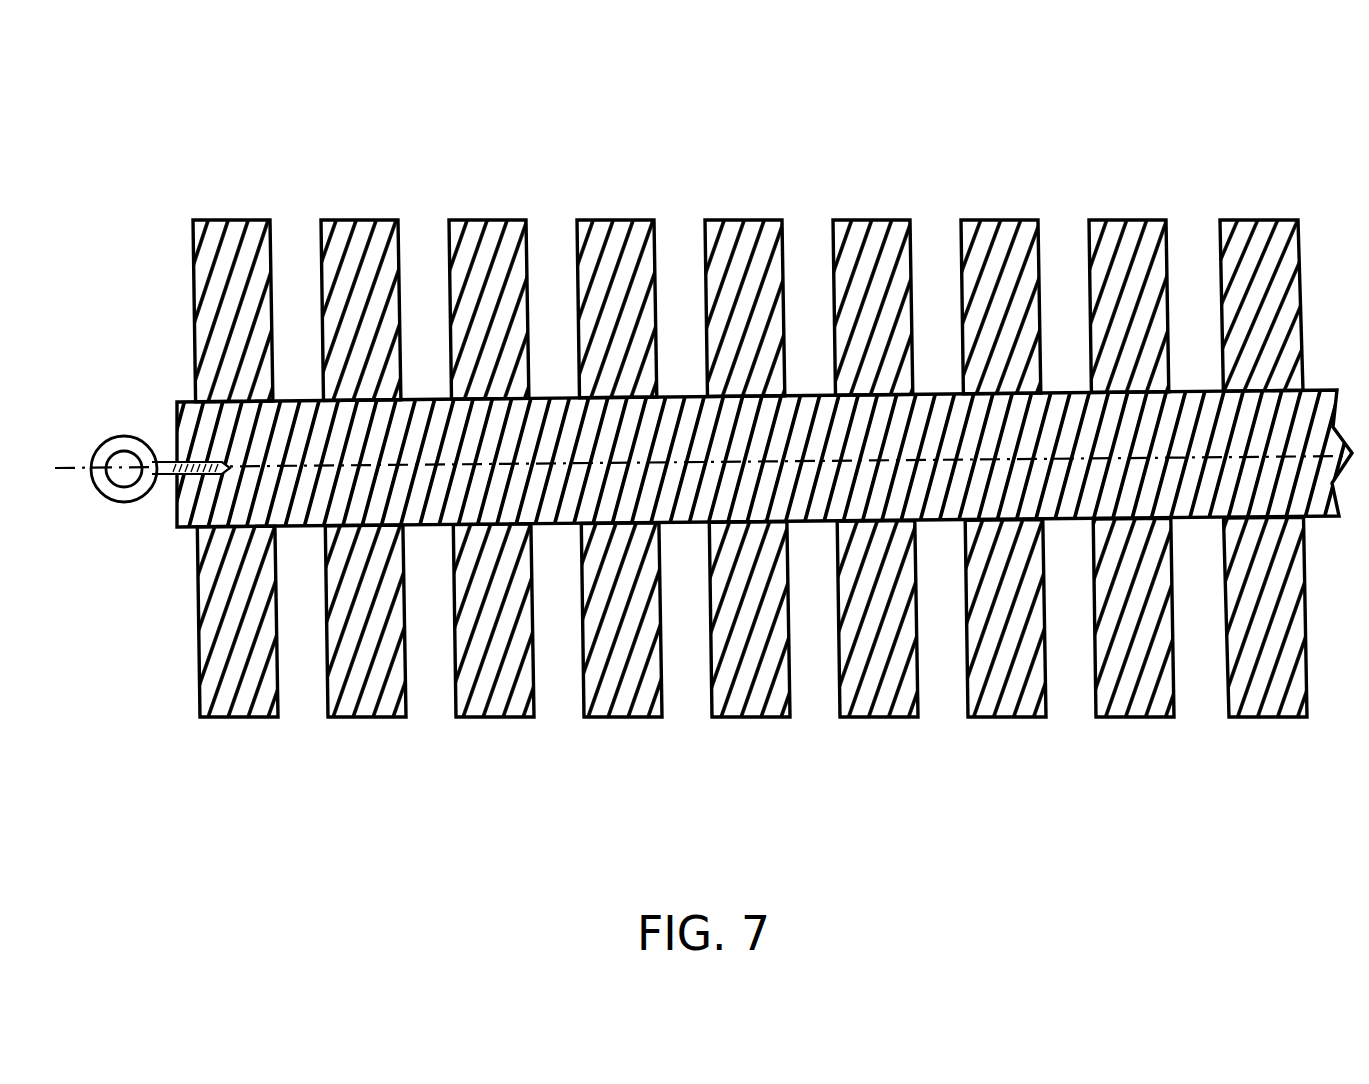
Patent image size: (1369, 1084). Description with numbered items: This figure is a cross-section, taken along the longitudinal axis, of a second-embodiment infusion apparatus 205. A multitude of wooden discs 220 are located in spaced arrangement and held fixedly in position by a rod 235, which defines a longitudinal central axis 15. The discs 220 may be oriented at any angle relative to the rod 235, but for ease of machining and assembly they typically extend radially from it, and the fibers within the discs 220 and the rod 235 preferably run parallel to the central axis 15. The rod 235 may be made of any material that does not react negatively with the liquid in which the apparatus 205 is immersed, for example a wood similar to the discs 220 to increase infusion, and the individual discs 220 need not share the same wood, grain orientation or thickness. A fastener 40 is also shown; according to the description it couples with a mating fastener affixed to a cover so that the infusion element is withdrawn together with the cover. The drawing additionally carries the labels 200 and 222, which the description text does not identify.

The infusion apparatus 205 is at (1184, 108).
The fence post 200 is at (193, 329).
The wooden discs 220 is at (730, 222).
The lower post portions 222 is at (840, 690).
The rod 235 is at (958, 392).
The longitudinal central axis 15 is at (80, 467).
The fastener 40 is at (126, 500).